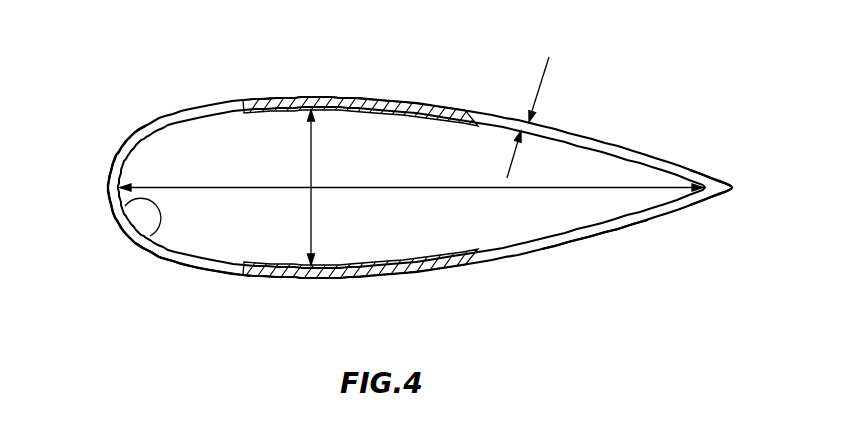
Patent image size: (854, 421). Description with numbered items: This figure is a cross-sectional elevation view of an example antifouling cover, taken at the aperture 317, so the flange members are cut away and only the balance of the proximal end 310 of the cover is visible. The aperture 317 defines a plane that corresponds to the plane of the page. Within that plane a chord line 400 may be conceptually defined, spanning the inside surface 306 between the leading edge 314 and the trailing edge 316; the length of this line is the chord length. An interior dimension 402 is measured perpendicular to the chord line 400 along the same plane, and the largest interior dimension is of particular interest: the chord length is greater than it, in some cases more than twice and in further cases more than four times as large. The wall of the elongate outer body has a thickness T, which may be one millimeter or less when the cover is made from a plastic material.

The chord line 400 is at (593, 187).
The interior dimension 402 is at (313, 152).
The leading edge 314 is at (107, 187).
The inside surface 306 is at (145, 247).
The proximal end 310 is at (187, 273).
The trailing edge 316 is at (732, 187).
The aperture 317 is at (583, 240).
The thickness T is at (541, 77).